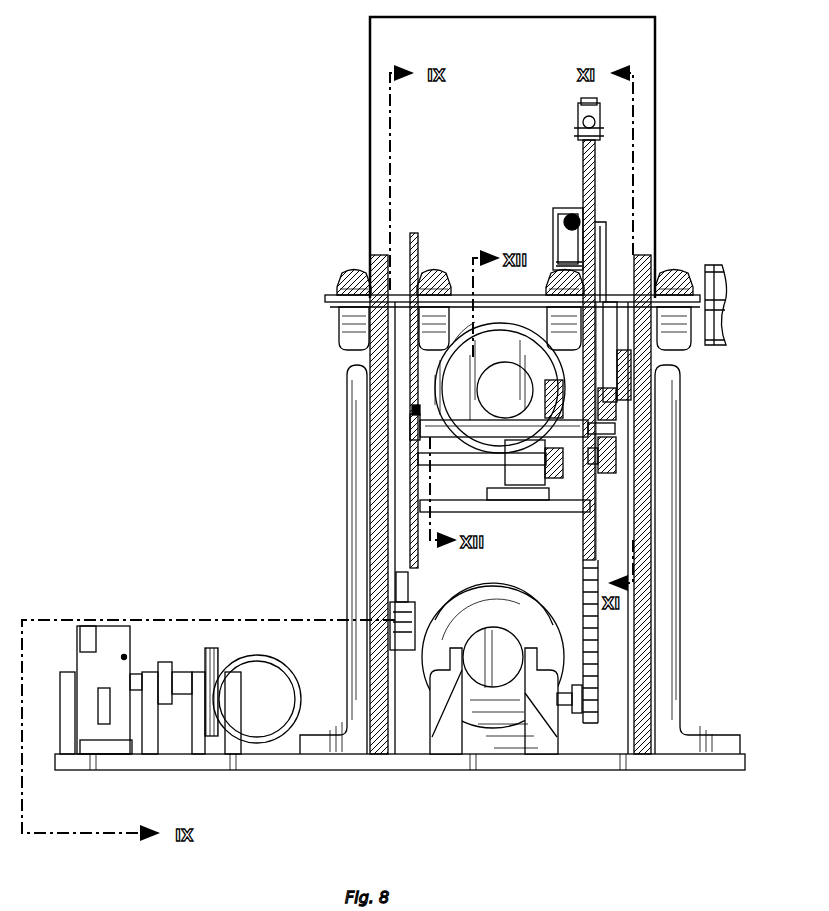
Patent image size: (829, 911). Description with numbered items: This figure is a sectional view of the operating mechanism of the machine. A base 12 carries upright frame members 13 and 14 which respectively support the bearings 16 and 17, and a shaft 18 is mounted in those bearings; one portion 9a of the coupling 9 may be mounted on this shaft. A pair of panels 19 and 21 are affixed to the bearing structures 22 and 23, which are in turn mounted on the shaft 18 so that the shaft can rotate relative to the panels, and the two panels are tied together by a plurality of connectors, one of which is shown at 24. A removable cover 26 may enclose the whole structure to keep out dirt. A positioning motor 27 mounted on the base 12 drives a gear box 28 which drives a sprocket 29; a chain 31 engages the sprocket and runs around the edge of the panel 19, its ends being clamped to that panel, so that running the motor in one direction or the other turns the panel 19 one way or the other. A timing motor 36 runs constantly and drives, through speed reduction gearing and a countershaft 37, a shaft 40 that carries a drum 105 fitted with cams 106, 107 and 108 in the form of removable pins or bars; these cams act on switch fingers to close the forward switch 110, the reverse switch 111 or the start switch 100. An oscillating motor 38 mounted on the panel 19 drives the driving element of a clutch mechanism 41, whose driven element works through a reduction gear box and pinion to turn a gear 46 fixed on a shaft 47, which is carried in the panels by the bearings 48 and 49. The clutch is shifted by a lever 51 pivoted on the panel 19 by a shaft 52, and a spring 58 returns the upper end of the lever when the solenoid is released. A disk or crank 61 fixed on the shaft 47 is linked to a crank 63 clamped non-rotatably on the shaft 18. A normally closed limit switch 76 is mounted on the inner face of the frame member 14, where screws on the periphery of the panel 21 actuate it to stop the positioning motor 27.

The coupling 9 is at (738, 264).
The portion of coupling 9a is at (712, 266).
The base 12 is at (350, 762).
The upright frame member 13 is at (645, 506).
The upright frame member 14 is at (378, 540).
The bearing 16 is at (668, 268).
The bearing 17 is at (345, 272).
The shaft 18 is at (465, 300).
The panel 19 is at (597, 184).
The panel 21 is at (413, 232).
The bearing structure 22 is at (552, 285).
The bearing structure 23 is at (425, 270).
The connector 24 is at (517, 512).
The removable cover 26 is at (655, 124).
The positioning motor 27 is at (520, 592).
The gear box 28 is at (434, 702).
The sprocket 29 is at (580, 718).
The chain 31 is at (598, 672).
The timing motor 36 is at (248, 670).
The countershaft 37 is at (200, 690).
The oscillating motor 38 is at (495, 307).
The shaft 40 is at (134, 678).
The clutch mechanism 41 is at (478, 345).
The gear 46 is at (545, 392).
The shaft 47 is at (477, 430).
The bearing 48 is at (413, 415).
The bearing 49 is at (600, 470).
The lever 51 is at (612, 242).
The shaft 52 is at (465, 460).
The spring 58 is at (573, 206).
The disk or crank 61 is at (618, 450).
The crank 63 is at (625, 340).
The limit switch 76 is at (412, 612).
The start switch 100 is at (128, 748).
The drum 105 is at (130, 640).
The cam 106 is at (122, 663).
The cam 107 is at (101, 716).
The cam 108 is at (87, 626).
The forward switch 110 is at (108, 745).
The reverse switch 111 is at (86, 745).